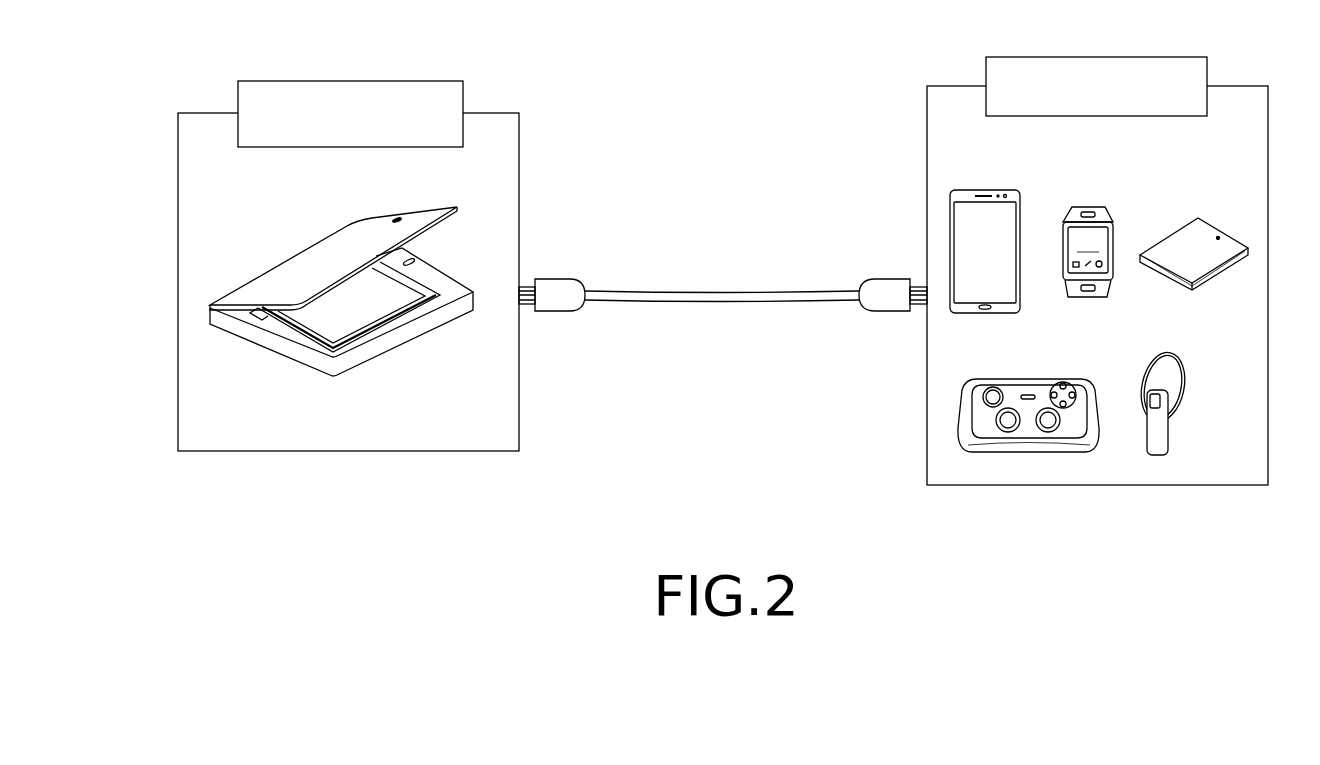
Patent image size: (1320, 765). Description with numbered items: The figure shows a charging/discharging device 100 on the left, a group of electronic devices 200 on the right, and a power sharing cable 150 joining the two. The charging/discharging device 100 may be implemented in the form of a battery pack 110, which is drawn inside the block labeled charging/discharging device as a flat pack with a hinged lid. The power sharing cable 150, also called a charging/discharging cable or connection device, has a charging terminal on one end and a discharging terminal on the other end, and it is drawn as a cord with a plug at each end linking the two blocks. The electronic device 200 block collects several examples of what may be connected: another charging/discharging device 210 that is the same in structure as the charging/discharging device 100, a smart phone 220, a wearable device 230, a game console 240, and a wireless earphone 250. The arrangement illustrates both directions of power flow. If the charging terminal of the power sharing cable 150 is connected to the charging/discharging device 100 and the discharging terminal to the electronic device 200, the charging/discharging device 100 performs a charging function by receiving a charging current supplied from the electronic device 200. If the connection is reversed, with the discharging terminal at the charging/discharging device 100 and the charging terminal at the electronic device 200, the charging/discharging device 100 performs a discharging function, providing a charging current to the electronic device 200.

The charging/discharging device 100 is at (352, 81).
The battery pack 110 is at (303, 248).
The power sharing cable 150 is at (720, 290).
The electronic device 200 is at (1101, 57).
The another charging/discharging device 210 is at (1198, 218).
The smart phone 220 is at (982, 188).
The wearable device 230 is at (1087, 205).
The game console 240 is at (1026, 380).
The wireless earphone 250 is at (1185, 385).